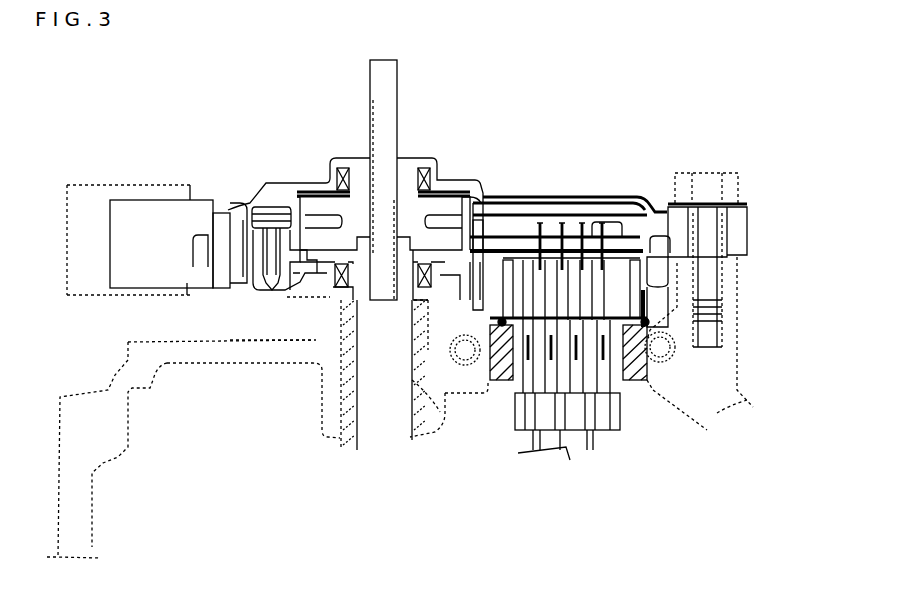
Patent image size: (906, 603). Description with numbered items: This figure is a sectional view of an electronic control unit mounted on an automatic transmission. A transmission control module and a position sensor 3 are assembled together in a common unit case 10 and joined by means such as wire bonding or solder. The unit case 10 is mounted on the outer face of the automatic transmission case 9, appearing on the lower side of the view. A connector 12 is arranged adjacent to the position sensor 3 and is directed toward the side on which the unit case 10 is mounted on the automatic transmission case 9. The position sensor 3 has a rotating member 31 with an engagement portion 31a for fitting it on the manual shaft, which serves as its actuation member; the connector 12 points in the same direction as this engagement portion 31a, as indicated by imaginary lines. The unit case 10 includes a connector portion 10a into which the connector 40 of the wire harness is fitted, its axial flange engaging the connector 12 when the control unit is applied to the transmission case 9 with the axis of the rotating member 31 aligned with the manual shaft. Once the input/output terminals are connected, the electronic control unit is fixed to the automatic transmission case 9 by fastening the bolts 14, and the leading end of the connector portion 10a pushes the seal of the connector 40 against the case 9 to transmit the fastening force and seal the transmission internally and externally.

The position sensor 3 is at (437, 182).
The automatic transmission case 9 is at (440, 413).
The unit case 10 is at (667, 213).
The connector portion 10a is at (647, 282).
The connector 12 is at (525, 257).
The bolts 14 is at (705, 172).
The rotating member 31 is at (322, 192).
The engagement portion 31a is at (365, 290).
The connector 40 is at (620, 398).